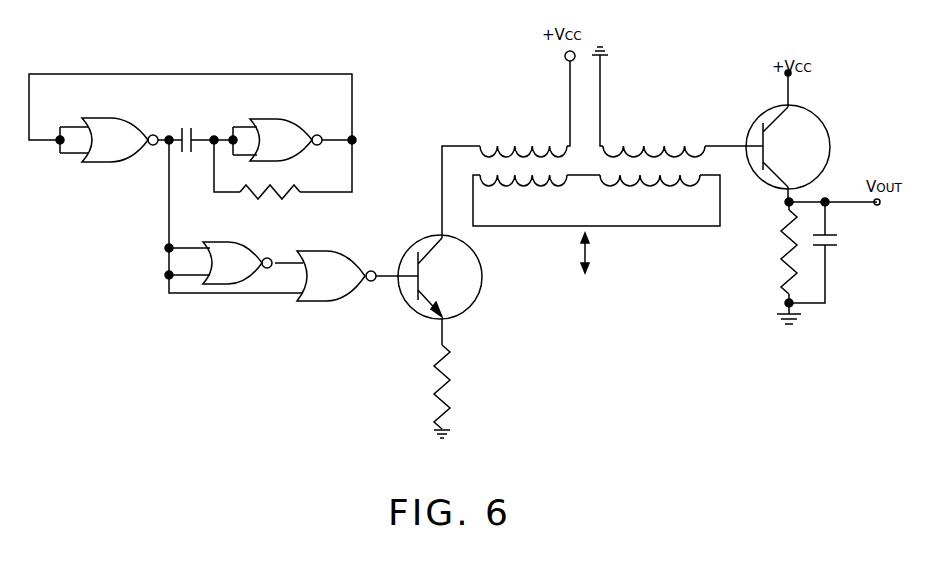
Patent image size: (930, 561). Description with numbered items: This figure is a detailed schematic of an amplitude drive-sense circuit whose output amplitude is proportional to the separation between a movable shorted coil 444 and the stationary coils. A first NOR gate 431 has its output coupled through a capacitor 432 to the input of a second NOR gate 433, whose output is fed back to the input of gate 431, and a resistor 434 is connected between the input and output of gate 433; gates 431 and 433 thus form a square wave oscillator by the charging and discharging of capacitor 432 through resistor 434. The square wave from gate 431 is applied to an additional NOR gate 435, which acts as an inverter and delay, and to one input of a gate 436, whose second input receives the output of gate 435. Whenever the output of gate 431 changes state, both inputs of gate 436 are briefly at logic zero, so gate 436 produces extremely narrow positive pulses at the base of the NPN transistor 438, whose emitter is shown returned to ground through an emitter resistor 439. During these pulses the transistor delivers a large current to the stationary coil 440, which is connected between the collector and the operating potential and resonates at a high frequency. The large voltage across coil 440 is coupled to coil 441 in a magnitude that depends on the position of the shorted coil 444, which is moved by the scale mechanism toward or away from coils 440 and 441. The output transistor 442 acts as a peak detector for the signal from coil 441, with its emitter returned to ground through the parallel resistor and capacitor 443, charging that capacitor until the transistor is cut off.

The first NOR gate 431 is at (128, 167).
The capacitor 432 is at (183, 126).
The second NOR gate 433 is at (258, 118).
The resistor 434 is at (284, 200).
The NOR gate 435 is at (221, 287).
The gate 436 is at (302, 301).
The NPN transistor 438 is at (423, 318).
The emitter resistor 439 is at (449, 386).
The stationary coil 440 is at (518, 146).
The coil 441 is at (658, 146).
The output transistor 442 is at (821, 118).
The parallel combination of a resistor and a capacitor 443 is at (878, 248).
The shorted coil 444 is at (515, 193).